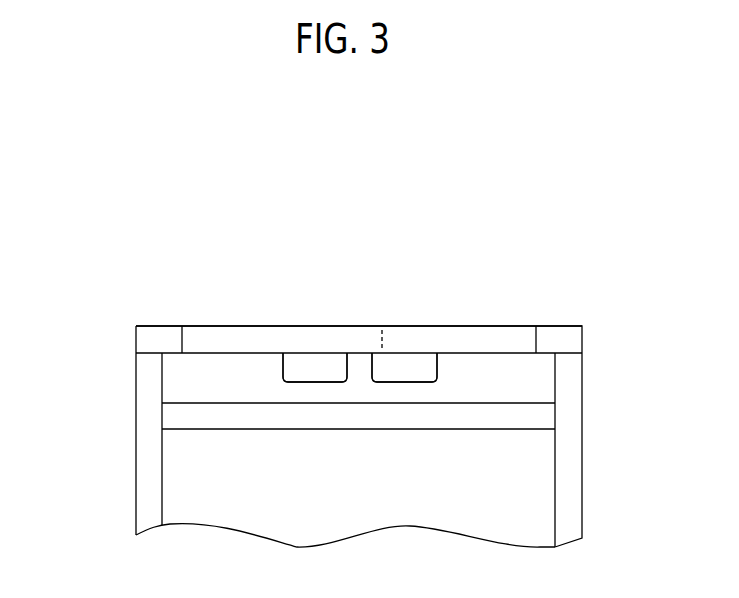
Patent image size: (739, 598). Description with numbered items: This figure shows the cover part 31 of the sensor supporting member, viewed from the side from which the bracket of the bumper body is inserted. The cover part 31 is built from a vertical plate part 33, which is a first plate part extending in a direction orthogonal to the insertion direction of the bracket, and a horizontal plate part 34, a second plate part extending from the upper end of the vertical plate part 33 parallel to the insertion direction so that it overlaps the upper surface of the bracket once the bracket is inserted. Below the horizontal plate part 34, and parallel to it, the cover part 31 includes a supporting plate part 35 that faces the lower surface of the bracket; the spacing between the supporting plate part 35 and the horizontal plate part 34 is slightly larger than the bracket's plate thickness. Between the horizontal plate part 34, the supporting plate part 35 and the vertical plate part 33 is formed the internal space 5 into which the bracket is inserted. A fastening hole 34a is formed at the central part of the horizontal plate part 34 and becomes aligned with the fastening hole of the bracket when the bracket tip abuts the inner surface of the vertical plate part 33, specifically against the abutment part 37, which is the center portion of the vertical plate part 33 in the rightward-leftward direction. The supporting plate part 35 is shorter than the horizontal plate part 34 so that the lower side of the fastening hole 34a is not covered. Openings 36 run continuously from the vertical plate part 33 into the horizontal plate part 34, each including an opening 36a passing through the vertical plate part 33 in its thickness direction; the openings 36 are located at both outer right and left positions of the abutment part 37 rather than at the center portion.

The internal space 5 is at (520, 380).
The cover part 31 is at (192, 326).
The vertical plate part 33 is at (518, 498).
The horizontal plate part 34 is at (505, 326).
The fastening hole 34a is at (345, 344).
The supporting plate part 35 is at (215, 430).
The openings 36 is at (360, 367).
The opening 36a is at (310, 368).
The abutment part 37 is at (360, 368).